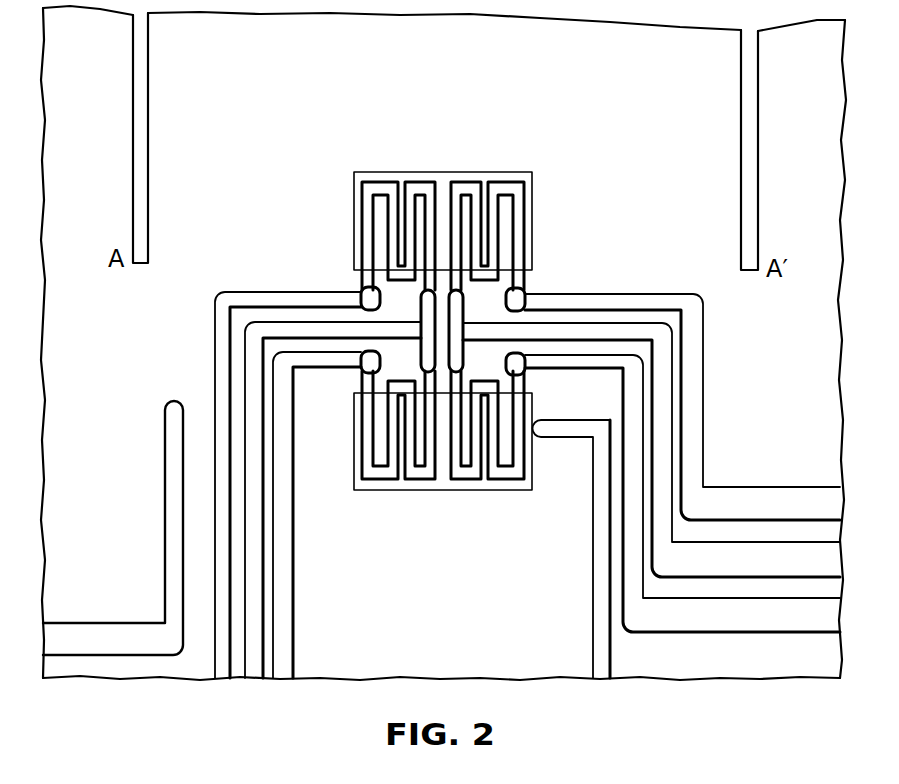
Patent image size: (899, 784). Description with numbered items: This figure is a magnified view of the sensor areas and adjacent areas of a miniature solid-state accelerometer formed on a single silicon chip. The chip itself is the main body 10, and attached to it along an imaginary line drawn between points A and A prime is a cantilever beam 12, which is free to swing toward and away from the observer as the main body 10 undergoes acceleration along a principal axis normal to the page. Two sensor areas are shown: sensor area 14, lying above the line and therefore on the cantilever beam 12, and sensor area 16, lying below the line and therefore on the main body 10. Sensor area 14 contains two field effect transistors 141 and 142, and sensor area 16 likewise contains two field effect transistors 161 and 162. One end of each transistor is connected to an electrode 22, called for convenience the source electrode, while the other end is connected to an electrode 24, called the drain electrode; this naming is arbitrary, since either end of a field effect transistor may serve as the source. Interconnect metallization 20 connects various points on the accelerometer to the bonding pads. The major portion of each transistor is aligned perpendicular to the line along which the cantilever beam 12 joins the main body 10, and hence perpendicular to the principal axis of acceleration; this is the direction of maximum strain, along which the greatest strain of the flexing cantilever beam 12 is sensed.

The main body 10 is at (725, 688).
The cantilever beam 12 is at (456, 73).
The sensor area 14 is at (397, 176).
The field effect transistor 141 is at (418, 177).
The field effect transistor 142 is at (513, 177).
The sensor area 16 is at (442, 482).
The field effect transistor 161 is at (380, 478).
The field effect transistor 162 is at (502, 473).
The interconnect metallization 20 is at (105, 643).
The source electrode 22 is at (363, 298).
The drain electrode 24 is at (430, 298).